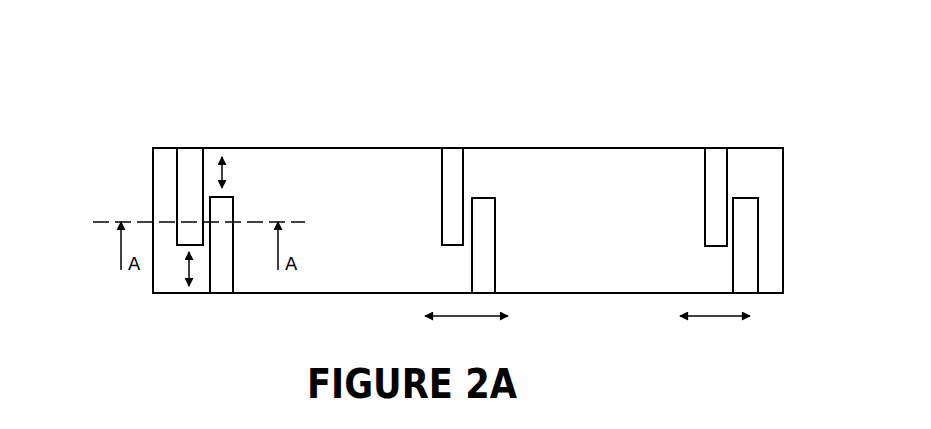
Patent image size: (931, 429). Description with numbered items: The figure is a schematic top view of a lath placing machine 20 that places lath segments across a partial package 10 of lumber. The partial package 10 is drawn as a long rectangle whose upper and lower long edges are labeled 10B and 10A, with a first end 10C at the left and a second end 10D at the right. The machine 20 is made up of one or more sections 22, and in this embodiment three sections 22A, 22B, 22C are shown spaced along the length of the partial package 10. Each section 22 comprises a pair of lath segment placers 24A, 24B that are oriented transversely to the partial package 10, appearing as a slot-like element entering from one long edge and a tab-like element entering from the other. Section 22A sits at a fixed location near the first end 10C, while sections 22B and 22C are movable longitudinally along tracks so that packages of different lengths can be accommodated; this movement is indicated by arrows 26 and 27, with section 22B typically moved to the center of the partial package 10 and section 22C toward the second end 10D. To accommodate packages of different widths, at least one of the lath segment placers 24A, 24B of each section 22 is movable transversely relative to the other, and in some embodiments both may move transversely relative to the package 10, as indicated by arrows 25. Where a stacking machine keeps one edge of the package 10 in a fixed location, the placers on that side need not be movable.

The partial package 10 is at (390, 148).
The bottom surface of substrate 10A is at (405, 293).
The top surface of substrate 10B is at (538, 148).
The first end 10C is at (153, 293).
The second end 10D is at (783, 293).
The lath placing machine 20 is at (133, 122).
The section 22 is at (177, 172).
The section 22A is at (213, 122).
The section 22B is at (453, 108).
The section 22C is at (725, 132).
The lath segment placer 24A is at (205, 160).
The lath segment placer 24B is at (232, 293).
The arrows 25 is at (226, 172).
The arrow 26 is at (458, 318).
The arrow 27 is at (715, 322).